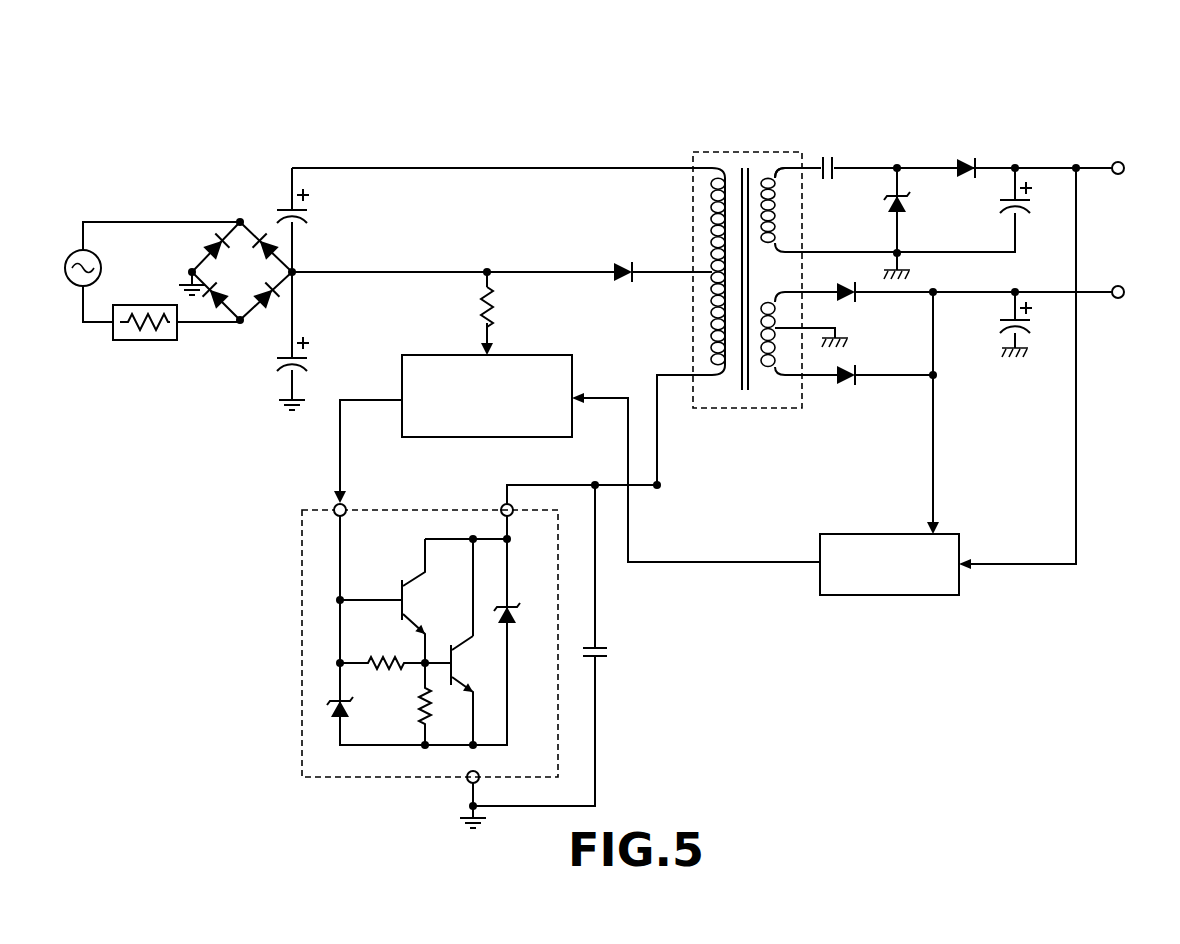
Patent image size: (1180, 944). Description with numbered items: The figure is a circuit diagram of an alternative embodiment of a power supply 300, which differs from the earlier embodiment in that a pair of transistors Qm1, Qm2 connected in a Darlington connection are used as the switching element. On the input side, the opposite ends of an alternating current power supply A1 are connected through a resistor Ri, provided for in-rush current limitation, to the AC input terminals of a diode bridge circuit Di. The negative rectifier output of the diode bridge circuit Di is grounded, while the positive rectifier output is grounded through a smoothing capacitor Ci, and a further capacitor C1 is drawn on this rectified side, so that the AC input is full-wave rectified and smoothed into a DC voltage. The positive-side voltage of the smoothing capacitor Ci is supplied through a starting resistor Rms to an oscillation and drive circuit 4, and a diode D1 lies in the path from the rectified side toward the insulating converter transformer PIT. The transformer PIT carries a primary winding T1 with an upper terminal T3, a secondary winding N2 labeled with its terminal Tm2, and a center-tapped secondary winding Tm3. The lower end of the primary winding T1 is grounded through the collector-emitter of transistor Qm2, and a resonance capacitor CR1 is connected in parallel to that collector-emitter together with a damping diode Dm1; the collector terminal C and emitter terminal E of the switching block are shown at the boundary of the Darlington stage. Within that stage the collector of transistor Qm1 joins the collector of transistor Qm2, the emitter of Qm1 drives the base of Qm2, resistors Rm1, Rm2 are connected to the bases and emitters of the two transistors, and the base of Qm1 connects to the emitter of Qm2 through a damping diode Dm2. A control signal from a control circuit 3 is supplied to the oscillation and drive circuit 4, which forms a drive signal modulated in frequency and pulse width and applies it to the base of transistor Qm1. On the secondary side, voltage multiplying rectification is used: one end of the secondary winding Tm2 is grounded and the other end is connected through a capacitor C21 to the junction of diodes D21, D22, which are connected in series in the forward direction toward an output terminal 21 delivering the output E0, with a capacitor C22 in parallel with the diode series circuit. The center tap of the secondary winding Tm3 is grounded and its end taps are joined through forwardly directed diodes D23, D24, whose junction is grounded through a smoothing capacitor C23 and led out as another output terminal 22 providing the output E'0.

The power supply 300 is at (903, 67).
The alternating current power supply A1 is at (98, 257).
The resistor Ri is at (176, 337).
The diode bridge circuit Di is at (243, 283).
The smoothing capacitor C1 is at (275, 212).
The smoothing capacitor Ci is at (270, 360).
The starting resistor Rms is at (458, 311).
The oscillation and drive circuit 4 is at (530, 354).
The diode D1 is at (623, 256).
The insulating converter transformer PIT is at (747, 265).
The primary winding terminal T3 is at (717, 170).
The primary winding T1 is at (717, 377).
The secondary winding N2 is at (796, 210).
The secondary winding Tm2 is at (771, 170).
The secondary winding Tm3 is at (772, 377).
The capacitor C21 is at (834, 160).
The diode D21 is at (915, 221).
The diode D22 is at (969, 158).
The capacitor C22 is at (1034, 212).
The output terminal 21 is at (1118, 161).
The secondary DC output voltage E0 is at (1144, 170).
The output terminal 22 is at (1118, 285).
The low-voltage DC output E'0 is at (1146, 294).
The diode D23 is at (853, 303).
The diode D24 is at (853, 385).
The capacitor C23 is at (1034, 330).
The control circuit 3 is at (903, 596).
The resonance capacitor CR1 is at (622, 575).
The collector terminal C is at (496, 501).
The emitter terminal E is at (466, 799).
The transistor Qm1 is at (392, 601).
The transistor Qm2 is at (459, 690).
The resistor Rm1 is at (399, 704).
The resistor Rm2 is at (382, 652).
The damping diode Dm1 is at (535, 602).
The damping diode Dm2 is at (326, 706).